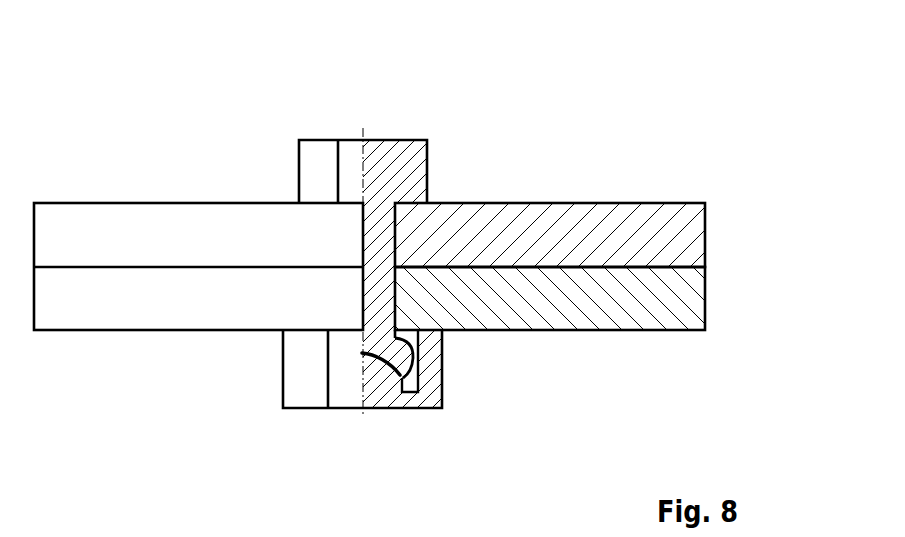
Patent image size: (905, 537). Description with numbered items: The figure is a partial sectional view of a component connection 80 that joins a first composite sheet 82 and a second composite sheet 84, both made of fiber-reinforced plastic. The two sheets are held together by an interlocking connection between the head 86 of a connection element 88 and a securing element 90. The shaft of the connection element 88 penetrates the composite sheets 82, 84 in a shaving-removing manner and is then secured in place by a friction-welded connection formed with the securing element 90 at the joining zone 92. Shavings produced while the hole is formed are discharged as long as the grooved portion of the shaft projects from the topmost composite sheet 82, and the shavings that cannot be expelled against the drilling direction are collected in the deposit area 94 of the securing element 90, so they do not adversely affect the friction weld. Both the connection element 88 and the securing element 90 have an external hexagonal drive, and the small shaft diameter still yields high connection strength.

The component connection 80 is at (547, 143).
The first composite sheet 82 is at (662, 220).
The second composite sheet 84 is at (663, 298).
The head 86 is at (400, 153).
The connection element 88 is at (292, 133).
The securing element 90 is at (430, 382).
The joining zone 92 is at (375, 358).
The deposit area 94 is at (420, 394).